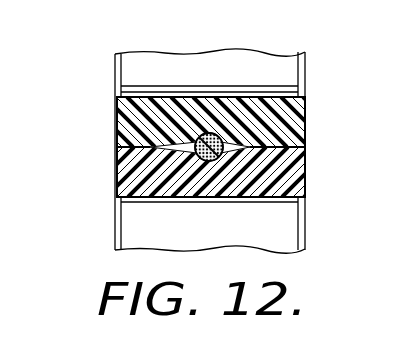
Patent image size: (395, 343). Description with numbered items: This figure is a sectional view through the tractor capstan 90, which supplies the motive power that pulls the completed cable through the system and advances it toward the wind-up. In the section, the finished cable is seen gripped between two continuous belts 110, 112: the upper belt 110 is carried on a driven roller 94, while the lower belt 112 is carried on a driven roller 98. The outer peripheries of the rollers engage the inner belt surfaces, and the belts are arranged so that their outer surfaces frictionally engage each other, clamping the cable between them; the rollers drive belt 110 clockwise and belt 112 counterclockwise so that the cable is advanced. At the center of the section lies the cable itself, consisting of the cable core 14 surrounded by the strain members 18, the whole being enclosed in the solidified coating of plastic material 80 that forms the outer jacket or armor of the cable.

The tractor capstan 90 is at (113, 79).
The driven roller 94 is at (149, 64).
The driven roller 98 is at (131, 228).
The continuous belt 110 is at (130, 126).
The continuous belt 112 is at (123, 187).
The strain member 18 is at (206, 134).
The cable core 14 is at (197, 159).
The plastic material 80 is at (215, 160).